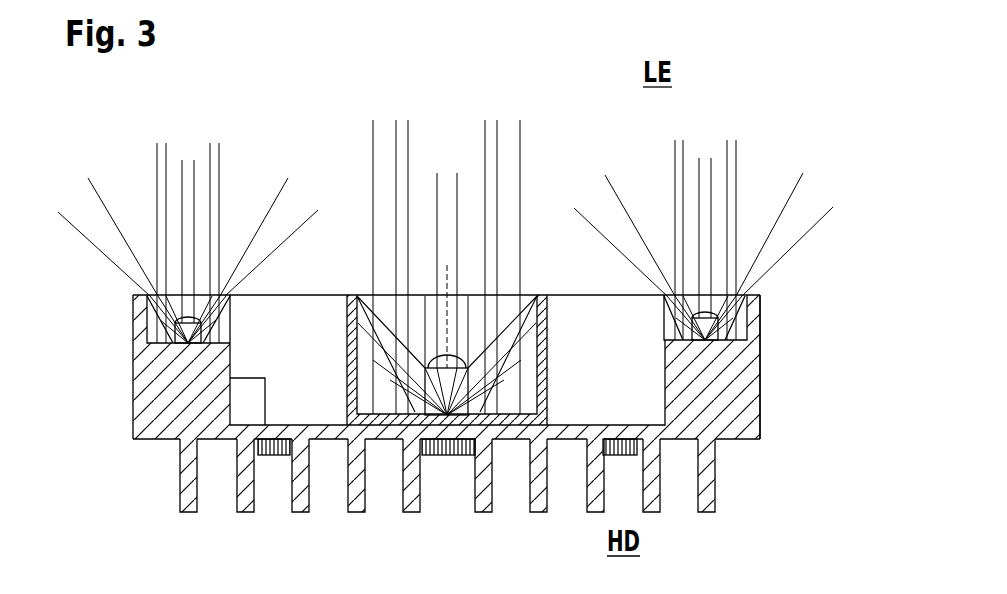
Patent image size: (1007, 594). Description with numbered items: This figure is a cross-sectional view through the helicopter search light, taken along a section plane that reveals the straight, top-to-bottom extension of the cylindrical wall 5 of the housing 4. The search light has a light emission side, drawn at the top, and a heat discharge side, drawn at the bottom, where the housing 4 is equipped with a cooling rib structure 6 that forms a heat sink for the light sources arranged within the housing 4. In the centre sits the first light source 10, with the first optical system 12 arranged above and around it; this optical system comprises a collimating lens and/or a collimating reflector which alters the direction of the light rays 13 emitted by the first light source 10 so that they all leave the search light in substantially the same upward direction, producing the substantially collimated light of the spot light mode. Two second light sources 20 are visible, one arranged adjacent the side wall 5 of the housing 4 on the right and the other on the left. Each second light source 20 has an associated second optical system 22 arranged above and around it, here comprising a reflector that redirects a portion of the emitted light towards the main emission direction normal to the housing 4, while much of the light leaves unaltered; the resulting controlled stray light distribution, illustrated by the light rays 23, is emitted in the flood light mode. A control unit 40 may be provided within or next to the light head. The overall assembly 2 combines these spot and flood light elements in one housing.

The lighting device 2 is at (103, 313).
The housing 4 is at (777, 438).
The cylindrical wall 5 is at (757, 319).
The cooling rib structure 6 is at (710, 484).
The first light source 10 is at (447, 440).
The first optical system 12 is at (383, 357).
The light rays 13 is at (546, 130).
The second light source 20 is at (188, 343).
The second optical system 22 is at (224, 327).
The light rays 23 is at (250, 138).
The control unit 40 is at (247, 388).